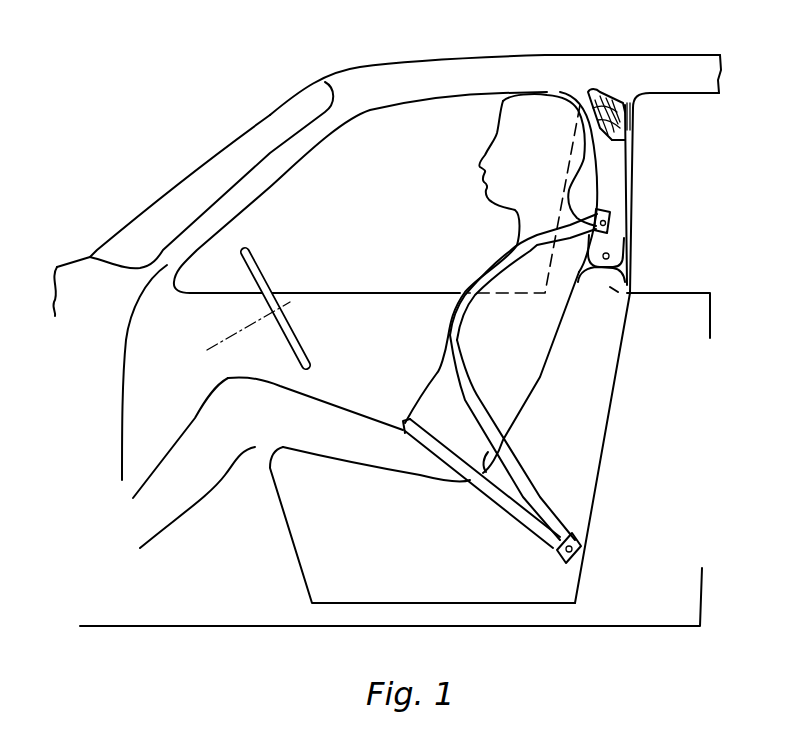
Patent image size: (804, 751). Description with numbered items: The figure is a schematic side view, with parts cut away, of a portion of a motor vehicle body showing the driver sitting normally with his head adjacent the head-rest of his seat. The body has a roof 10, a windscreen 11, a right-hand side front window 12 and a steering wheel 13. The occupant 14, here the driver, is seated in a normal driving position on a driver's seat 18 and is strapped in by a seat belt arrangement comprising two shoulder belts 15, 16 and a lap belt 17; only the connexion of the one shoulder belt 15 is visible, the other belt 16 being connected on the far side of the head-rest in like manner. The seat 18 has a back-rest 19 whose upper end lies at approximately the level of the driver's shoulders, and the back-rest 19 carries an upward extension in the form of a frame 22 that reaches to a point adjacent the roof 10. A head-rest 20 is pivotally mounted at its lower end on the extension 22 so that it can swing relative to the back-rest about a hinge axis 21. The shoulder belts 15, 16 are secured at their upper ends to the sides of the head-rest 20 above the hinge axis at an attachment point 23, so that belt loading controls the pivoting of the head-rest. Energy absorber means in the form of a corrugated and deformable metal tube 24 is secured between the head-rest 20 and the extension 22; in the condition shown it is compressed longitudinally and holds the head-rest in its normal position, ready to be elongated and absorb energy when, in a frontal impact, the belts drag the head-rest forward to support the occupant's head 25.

The roof 10 is at (459, 57).
The windscreen 11 is at (258, 140).
The right-hand side front window 12 is at (379, 130).
The steering wheel 13 is at (258, 263).
The occupant 14 is at (313, 393).
The shoulder belt 15 is at (530, 233).
The shoulder belt 16 is at (470, 383).
The lap belt 17 is at (483, 493).
The driver's seat 18 is at (313, 567).
The back-rest 19 is at (618, 362).
The head-rest 20 is at (627, 177).
The hinge axis 21 is at (610, 257).
The frame 22 is at (635, 200).
The belt attachment point 23 is at (612, 223).
The corrugated and deformable metal tube 24 is at (612, 143).
The head 25 is at (508, 138).